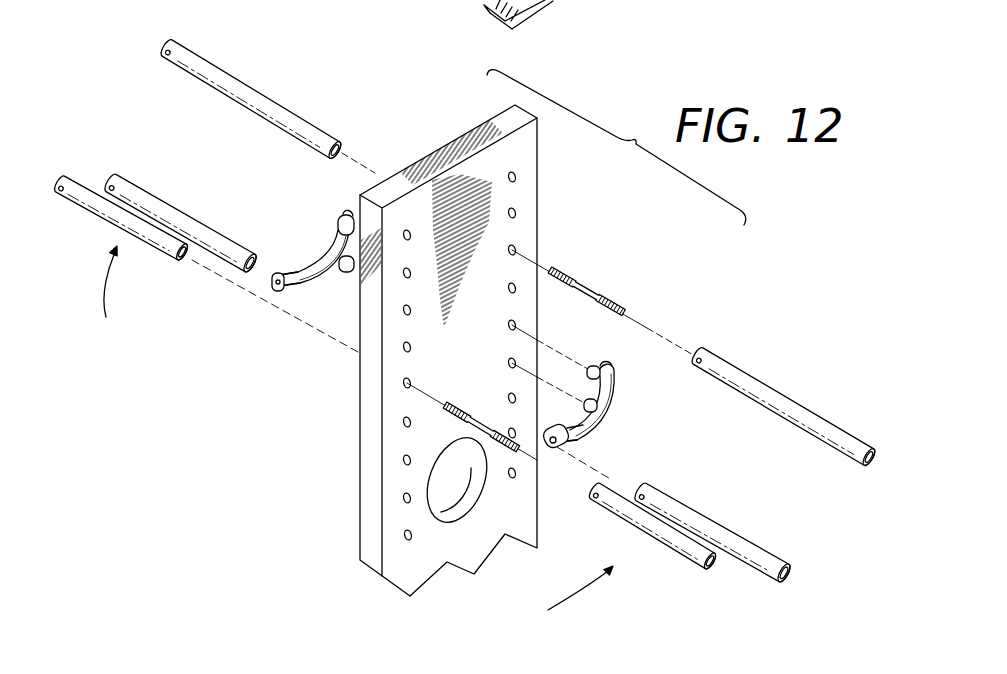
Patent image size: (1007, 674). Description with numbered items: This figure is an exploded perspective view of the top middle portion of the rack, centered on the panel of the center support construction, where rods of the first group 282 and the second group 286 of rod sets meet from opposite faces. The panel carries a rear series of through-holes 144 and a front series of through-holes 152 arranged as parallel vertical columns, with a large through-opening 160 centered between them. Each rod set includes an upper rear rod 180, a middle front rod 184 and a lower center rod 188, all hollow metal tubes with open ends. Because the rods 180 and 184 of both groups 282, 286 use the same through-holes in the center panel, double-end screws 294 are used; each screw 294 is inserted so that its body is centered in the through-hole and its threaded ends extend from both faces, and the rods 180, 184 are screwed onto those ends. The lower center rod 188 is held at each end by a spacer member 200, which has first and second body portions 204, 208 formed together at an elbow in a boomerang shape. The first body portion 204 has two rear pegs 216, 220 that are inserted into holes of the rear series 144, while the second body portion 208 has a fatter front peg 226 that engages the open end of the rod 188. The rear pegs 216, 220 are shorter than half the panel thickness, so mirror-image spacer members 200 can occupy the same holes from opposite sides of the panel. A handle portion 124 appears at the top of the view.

The handle portion 124 is at (616, 0).
The rear series of through-holes 144 is at (513, 176).
The front series of through-holes 152 is at (408, 536).
The large through-opening 160 is at (457, 474).
The upper rear rod 180 is at (228, 80).
The middle front rod 184 is at (75, 193).
The lower center rod 188 is at (170, 208).
The spacer member 200 is at (316, 276).
The first body portion 204 is at (337, 238).
The second body portion 208 is at (295, 290).
The rear peg 216 is at (345, 222).
The rear peg 220 is at (350, 272).
The front peg 226 is at (277, 284).
The first group of sets of rods 282 is at (104, 288).
The second group of sets of rods 286 is at (556, 595).
The double-end screw 294 is at (587, 292).